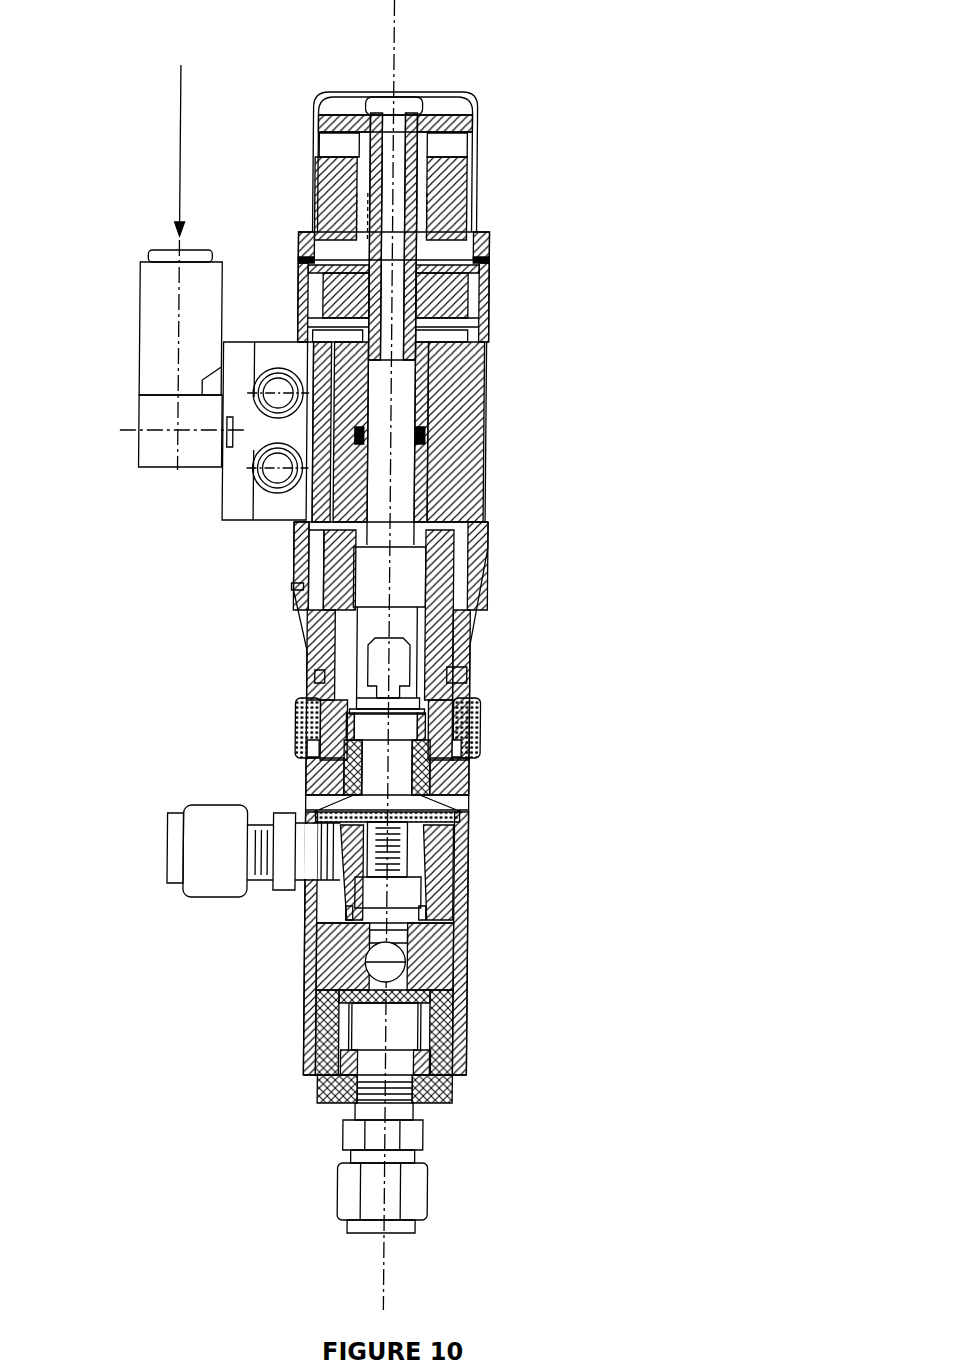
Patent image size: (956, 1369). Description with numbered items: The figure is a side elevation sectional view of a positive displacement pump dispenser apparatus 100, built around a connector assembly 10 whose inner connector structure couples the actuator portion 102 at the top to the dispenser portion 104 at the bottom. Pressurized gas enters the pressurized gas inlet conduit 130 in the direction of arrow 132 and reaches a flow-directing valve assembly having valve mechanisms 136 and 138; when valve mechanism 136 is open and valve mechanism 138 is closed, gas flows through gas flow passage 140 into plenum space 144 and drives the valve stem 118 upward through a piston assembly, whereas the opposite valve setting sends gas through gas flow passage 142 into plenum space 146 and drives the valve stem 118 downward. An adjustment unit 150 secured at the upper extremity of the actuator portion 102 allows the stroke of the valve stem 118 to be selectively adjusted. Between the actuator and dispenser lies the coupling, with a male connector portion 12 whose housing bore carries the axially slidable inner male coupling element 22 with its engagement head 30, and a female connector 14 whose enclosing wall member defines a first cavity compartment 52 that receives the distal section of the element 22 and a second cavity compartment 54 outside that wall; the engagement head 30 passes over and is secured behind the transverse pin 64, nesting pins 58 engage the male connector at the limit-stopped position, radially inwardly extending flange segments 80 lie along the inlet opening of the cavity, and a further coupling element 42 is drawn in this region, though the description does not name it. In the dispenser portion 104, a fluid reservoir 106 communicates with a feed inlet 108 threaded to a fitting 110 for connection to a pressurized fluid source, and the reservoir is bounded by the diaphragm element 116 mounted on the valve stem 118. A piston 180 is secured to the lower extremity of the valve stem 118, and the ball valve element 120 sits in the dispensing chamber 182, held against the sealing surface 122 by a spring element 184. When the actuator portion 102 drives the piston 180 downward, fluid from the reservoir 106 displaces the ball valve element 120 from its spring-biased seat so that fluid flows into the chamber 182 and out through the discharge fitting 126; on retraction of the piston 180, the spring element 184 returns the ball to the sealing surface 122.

The connector assembly 10 is at (250, 705).
The male connector portion 12 is at (503, 796).
The female connector 14 is at (523, 640).
The inner male coupling element 22 is at (478, 728).
The engagement head 30 is at (373, 677).
The seal bushing 42 is at (478, 740).
The first cavity compartment 52 is at (460, 675).
The second cavity compartment 54 is at (448, 615).
The nesting pins 58 is at (448, 645).
The transverse pin 64 is at (442, 692).
The flange segments 80 is at (307, 688).
The dispenser apparatus 100 is at (532, 128).
The actuator portion 102 is at (528, 400).
The dispenser portion 104 is at (530, 966).
The fluid reservoir 106 is at (413, 860).
The feed inlet 108 is at (343, 867).
The fitting 110 is at (222, 813).
The diaphragm element 116 is at (452, 806).
The valve stem 118 is at (420, 826).
The ball valve element 120 is at (380, 957).
The sealing surface 122 is at (430, 962).
The discharge fitting 126 is at (413, 1188).
The pressurized gas inlet conduit 130 is at (208, 313).
The arrow 132 is at (179, 100).
The valve mechanism 136 is at (278, 385).
The valve mechanism 138 is at (277, 470).
The gas flow passage 140 is at (340, 372).
The gas flow passage 142 is at (335, 497).
The plenum space 144 is at (316, 240).
The plenum space 146 is at (300, 548).
The adjustment unit 150 is at (476, 150).
The piston 180 is at (400, 892).
The dispensing chamber 182 is at (455, 995).
The spring element 184 is at (450, 1028).